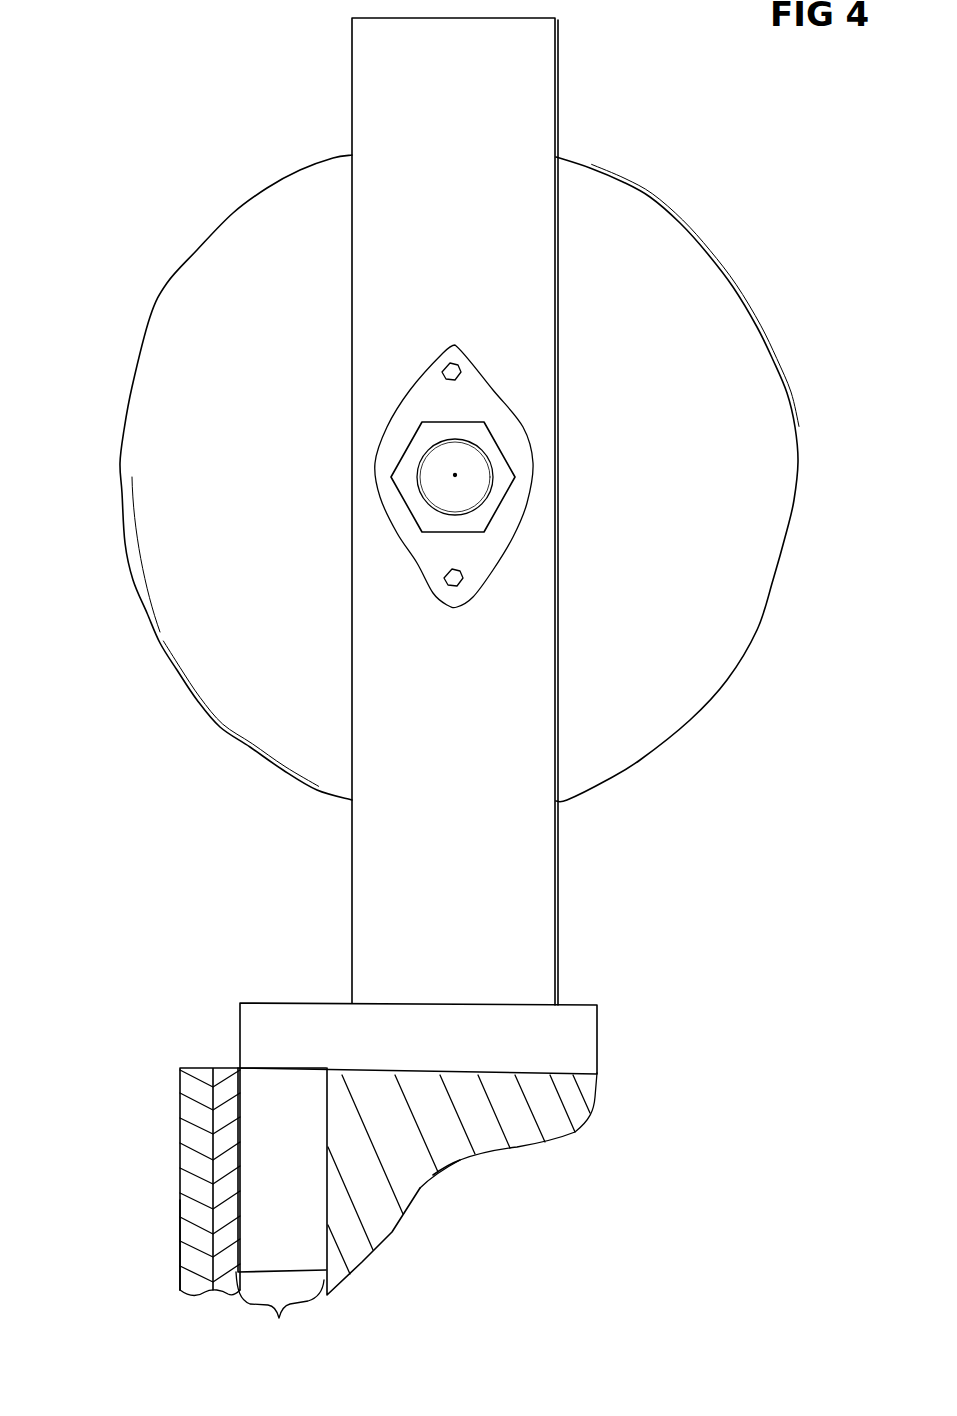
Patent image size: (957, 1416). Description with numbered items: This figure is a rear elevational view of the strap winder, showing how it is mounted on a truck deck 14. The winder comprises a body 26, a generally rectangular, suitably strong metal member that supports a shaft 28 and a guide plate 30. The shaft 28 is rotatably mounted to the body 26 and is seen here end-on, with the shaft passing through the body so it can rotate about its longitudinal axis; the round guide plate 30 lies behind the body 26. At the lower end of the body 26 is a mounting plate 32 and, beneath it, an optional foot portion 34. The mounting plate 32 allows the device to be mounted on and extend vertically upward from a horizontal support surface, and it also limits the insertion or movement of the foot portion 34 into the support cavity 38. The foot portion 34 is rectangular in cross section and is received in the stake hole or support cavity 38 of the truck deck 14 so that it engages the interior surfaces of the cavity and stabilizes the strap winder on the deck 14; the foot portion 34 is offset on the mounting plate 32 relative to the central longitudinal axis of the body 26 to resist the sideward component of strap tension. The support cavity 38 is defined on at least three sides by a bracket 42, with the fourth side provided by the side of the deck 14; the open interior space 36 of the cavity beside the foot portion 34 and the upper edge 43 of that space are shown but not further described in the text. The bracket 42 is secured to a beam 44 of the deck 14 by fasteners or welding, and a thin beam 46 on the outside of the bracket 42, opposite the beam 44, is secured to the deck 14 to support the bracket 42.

The truck deck 14 is at (575, 1093).
The body 26 is at (532, 115).
The shaft 28 is at (467, 491).
The guide plate 30 is at (740, 542).
The mounting plate 32 is at (577, 1018).
The foot portion 34 is at (300, 1245).
The channel 36 is at (269, 1270).
The support cavity 38 is at (280, 1324).
The bracket 42 is at (216, 1109).
The top surface 43 is at (292, 1133).
The beam 44 is at (447, 1150).
The thin beam 46 is at (178, 1232).